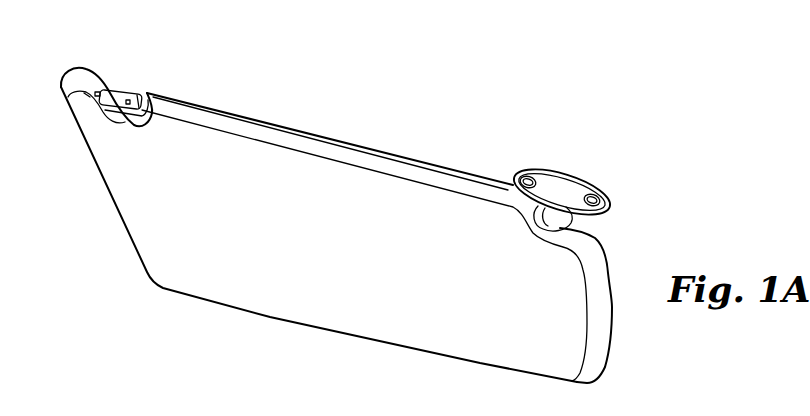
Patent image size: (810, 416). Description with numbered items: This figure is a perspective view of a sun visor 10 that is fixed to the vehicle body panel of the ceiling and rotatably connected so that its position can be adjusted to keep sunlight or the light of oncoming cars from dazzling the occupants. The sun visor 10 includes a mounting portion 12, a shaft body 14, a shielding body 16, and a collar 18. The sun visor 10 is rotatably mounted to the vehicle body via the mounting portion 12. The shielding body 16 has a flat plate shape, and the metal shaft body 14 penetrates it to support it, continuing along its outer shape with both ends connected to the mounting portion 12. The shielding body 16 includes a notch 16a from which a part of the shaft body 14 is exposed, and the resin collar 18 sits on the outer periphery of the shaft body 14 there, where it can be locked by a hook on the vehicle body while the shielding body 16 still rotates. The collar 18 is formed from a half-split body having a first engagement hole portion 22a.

The sun visor 10 is at (343, 369).
The mounting portion 12 is at (563, 185).
The shaft body 14 is at (572, 219).
The shielding body 16 is at (347, 187).
The notch 16a is at (125, 121).
The collar 18 is at (121, 90).
The first engagement hole portion 22a is at (128, 103).